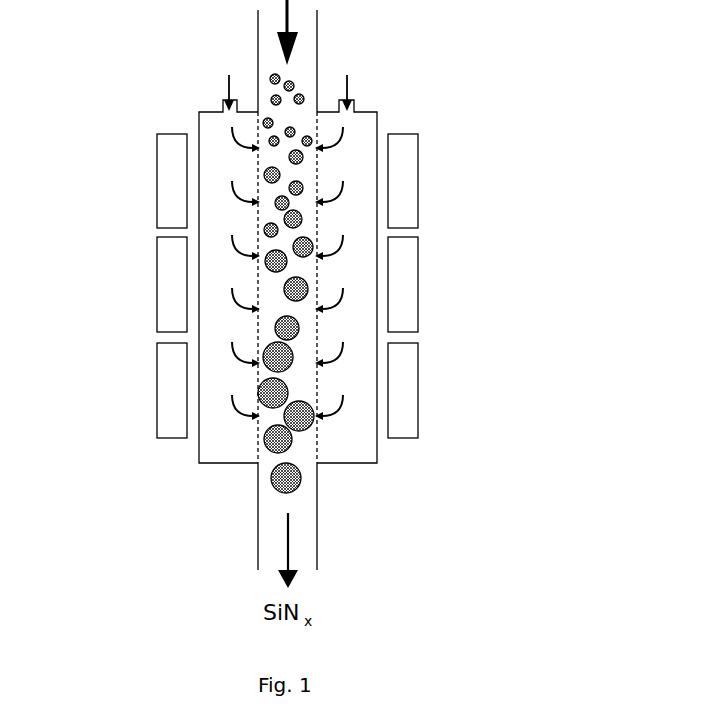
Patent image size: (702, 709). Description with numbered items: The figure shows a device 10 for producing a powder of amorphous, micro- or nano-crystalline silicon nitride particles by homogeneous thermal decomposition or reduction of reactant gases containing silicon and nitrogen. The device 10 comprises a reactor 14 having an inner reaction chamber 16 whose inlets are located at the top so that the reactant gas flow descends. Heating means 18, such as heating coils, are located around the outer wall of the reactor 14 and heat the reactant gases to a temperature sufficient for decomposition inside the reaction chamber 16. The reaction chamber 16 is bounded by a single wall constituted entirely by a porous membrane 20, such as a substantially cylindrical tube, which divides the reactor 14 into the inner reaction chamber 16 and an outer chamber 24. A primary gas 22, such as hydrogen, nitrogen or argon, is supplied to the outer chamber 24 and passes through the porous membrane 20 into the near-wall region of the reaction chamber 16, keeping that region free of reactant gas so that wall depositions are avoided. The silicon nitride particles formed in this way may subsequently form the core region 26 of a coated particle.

The device 10 is at (506, 93).
The reactor 14 is at (215, 132).
The reaction chamber 16 is at (287, 313).
The means for heating 18 is at (163, 193).
The porous membrane 20 is at (260, 227).
The primary gas 22 is at (284, 79).
The outer chamber 24 is at (214, 453).
The core region 26 is at (297, 483).